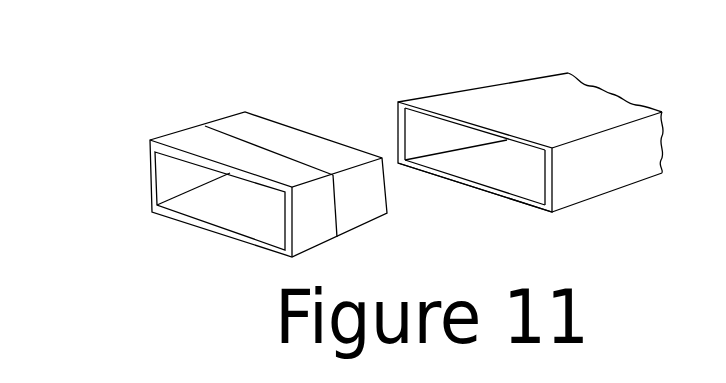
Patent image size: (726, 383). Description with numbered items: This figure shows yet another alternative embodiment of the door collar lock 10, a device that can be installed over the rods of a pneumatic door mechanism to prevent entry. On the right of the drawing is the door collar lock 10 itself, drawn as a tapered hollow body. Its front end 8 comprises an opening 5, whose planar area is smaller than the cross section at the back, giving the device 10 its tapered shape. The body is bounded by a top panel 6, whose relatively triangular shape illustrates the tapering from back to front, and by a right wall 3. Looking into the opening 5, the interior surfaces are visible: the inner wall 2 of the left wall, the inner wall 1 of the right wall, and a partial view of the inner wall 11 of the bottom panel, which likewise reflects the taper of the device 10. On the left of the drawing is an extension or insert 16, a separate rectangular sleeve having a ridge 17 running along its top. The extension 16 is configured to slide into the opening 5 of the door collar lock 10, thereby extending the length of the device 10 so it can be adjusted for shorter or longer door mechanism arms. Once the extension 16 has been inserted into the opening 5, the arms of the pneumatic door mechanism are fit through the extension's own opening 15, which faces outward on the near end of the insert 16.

The inner wall 1 is at (522, 187).
The inner wall 2 is at (438, 154).
The right wall 3 is at (618, 182).
The opening 5 is at (398, 136).
The top panel 6 is at (558, 124).
The front end 8 is at (418, 198).
The door collar lock 10 is at (500, 136).
The inner wall 11 is at (523, 182).
The extension's opening 15 is at (156, 176).
The extension or insert 16 is at (233, 152).
The rib 17 is at (260, 118).